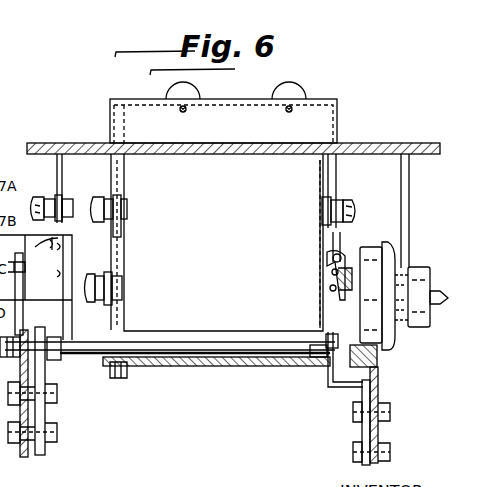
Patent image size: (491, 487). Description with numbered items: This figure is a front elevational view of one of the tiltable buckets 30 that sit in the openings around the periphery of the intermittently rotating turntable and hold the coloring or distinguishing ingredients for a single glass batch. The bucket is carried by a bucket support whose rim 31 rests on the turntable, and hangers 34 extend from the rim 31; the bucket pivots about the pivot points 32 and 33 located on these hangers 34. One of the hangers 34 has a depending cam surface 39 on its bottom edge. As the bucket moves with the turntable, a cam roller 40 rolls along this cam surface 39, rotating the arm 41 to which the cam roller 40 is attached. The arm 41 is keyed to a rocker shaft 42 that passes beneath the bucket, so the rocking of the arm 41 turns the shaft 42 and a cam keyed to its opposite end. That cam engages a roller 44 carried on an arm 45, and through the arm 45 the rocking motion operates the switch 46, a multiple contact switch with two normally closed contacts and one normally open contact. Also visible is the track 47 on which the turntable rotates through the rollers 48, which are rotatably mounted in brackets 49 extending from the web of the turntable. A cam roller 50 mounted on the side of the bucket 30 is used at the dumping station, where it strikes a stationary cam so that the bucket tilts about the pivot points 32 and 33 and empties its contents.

The bucket 30 is at (343, 153).
The rim 31 is at (338, 125).
The pivot point 32 is at (108, 197).
The pivot point 33 is at (338, 211).
The hanger 34 is at (112, 166).
The cam surface 39 is at (338, 248).
The cam roller 40 is at (342, 250).
The arm 41 is at (331, 318).
The rocker shaft 42 is at (295, 360).
The roller 44 is at (22, 324).
The arm 45 is at (19, 284).
The switch 46 is at (45, 240).
The track 47 is at (378, 358).
The roller 48 is at (393, 253).
The bracket 49 is at (409, 219).
The cam roller 50 is at (102, 272).